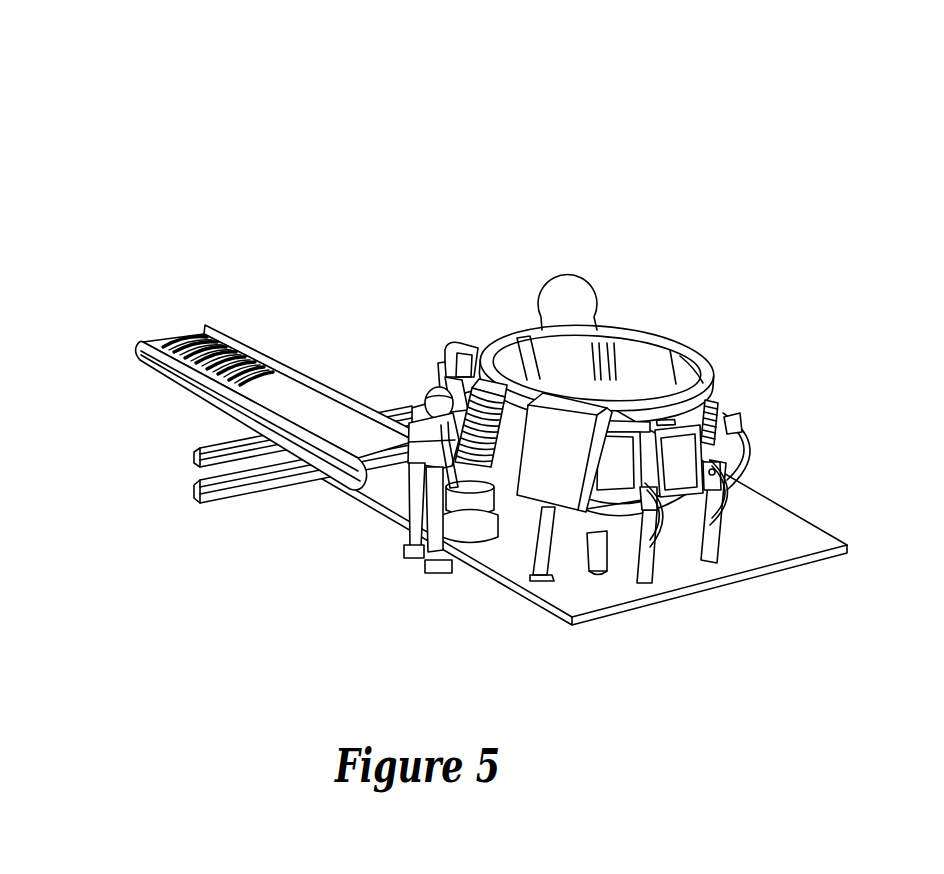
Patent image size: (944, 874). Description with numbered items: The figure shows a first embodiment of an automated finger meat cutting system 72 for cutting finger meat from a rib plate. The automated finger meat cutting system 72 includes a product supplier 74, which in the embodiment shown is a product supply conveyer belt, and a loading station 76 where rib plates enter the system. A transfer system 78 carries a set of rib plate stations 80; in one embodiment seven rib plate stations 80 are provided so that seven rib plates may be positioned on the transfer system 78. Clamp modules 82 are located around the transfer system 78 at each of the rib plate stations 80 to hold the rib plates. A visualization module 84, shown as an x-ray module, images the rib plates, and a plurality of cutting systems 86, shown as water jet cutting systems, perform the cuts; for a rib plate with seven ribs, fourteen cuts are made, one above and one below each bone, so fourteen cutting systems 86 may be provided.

The automated finger meat cutting system 72 is at (457, 345).
The product supplier 74 is at (153, 363).
The loading station 76 is at (400, 522).
The transfer system 78 is at (655, 378).
The rib plate stations 80 is at (677, 452).
The clamp modules 82 is at (647, 410).
The visualization module 84 is at (543, 460).
The cutting systems 86 is at (755, 485).